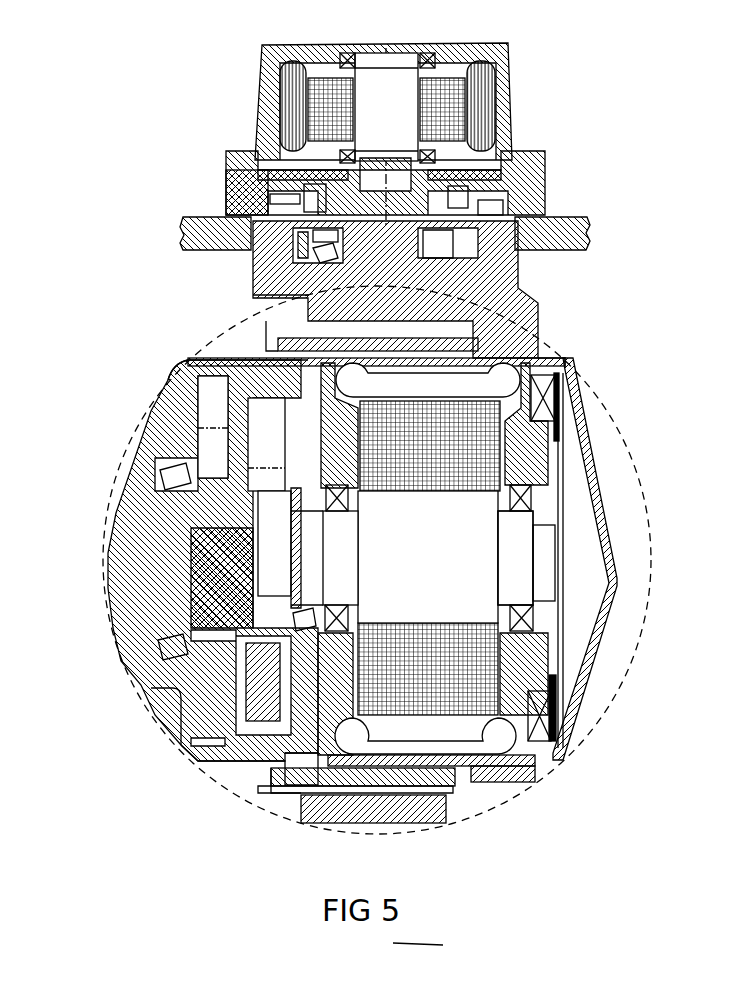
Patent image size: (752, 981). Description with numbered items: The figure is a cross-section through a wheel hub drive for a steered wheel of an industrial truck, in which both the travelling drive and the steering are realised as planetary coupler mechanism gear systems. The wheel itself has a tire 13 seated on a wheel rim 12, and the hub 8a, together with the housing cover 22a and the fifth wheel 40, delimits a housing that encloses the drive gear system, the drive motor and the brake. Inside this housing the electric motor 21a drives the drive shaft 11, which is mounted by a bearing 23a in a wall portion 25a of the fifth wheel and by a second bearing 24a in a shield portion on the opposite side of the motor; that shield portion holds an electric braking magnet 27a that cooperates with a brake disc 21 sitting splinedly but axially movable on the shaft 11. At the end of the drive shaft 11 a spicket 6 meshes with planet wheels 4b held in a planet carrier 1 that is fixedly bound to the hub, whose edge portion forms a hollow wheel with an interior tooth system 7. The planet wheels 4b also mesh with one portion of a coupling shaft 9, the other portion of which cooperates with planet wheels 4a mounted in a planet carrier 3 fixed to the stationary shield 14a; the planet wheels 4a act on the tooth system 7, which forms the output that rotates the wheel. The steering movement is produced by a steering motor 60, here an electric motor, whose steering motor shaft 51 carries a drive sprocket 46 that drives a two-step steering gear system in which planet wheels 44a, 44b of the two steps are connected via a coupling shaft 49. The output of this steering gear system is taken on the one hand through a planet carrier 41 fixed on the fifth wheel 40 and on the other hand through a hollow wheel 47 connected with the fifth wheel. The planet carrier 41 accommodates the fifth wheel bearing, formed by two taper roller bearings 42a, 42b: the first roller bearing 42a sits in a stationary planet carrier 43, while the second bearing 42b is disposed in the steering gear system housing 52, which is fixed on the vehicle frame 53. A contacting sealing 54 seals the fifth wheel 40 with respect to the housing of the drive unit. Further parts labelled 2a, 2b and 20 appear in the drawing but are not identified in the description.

The planet carrier 1 is at (157, 542).
The bearing 2a is at (147, 647).
The bearing seat 2b is at (153, 713).
The planet carrier 3 is at (167, 677).
The planet wheels 4a is at (200, 438).
The planet wheels 4b is at (147, 503).
The spicket 6 is at (147, 610).
The interior tooth system 7 is at (193, 750).
The hub 8a is at (120, 487).
The coupling shaft 9 is at (147, 392).
The drive shaft 11 is at (507, 548).
The wheel rim 12 is at (277, 778).
The tire 13 is at (428, 808).
The shield 14a is at (273, 745).
The stator 20 is at (470, 667).
The brake disc 21 is at (547, 690).
The electric motor 21a is at (452, 558).
The housing cover 22a is at (587, 450).
The bearing 23a is at (230, 750).
The bearing 24a is at (523, 483).
The wall portion 25a is at (293, 780).
The electric braking magnet 27a is at (557, 368).
The fifth wheel 40 is at (503, 288).
The planet carrier 41 is at (535, 153).
The first roller bearing 42a is at (327, 245).
The second roller bearing 42b is at (275, 143).
The stationary planet carrier 43 is at (453, 220).
The planet wheels 44a is at (288, 215).
The planet wheels 44b is at (283, 180).
The drive sprocket 46 is at (503, 135).
The hollow wheel 47 is at (278, 238).
The coupling shaft 49 is at (462, 188).
The steering motor shaft 51 is at (500, 47).
The steering gear system housing 52 is at (232, 193).
The vehicle frame 53 is at (537, 220).
The contacting sealing 54 is at (502, 210).
The steering motor 60 is at (392, 73).